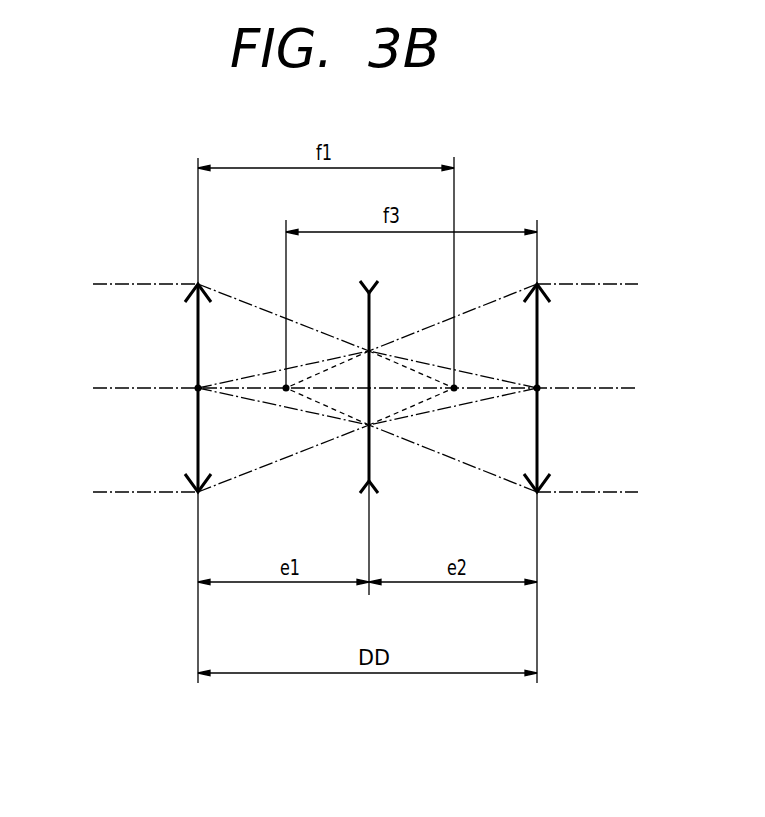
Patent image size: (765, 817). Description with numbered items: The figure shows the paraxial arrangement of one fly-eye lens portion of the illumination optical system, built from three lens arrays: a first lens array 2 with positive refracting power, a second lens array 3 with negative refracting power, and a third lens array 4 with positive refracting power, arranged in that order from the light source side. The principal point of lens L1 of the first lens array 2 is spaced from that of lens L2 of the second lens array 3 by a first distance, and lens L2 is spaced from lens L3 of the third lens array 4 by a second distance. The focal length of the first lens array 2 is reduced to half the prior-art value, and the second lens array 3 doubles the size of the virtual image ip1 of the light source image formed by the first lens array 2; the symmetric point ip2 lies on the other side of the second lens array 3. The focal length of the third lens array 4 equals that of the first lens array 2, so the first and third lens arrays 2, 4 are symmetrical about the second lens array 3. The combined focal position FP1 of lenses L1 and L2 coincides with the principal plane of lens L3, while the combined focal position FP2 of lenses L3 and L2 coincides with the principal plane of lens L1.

The first lens array 2 is at (197, 336).
The second lens array 3 is at (367, 318).
The third lens array 4 is at (537, 330).
The combined focal position of the first and second lens arrays FP1 is at (537, 388).
The combined focal position of the third and second lens arrays FP2 is at (197, 388).
The virtual image of the light source image ip1 is at (454, 388).
The image point (focal point of third lens) ip2 is at (287, 388).